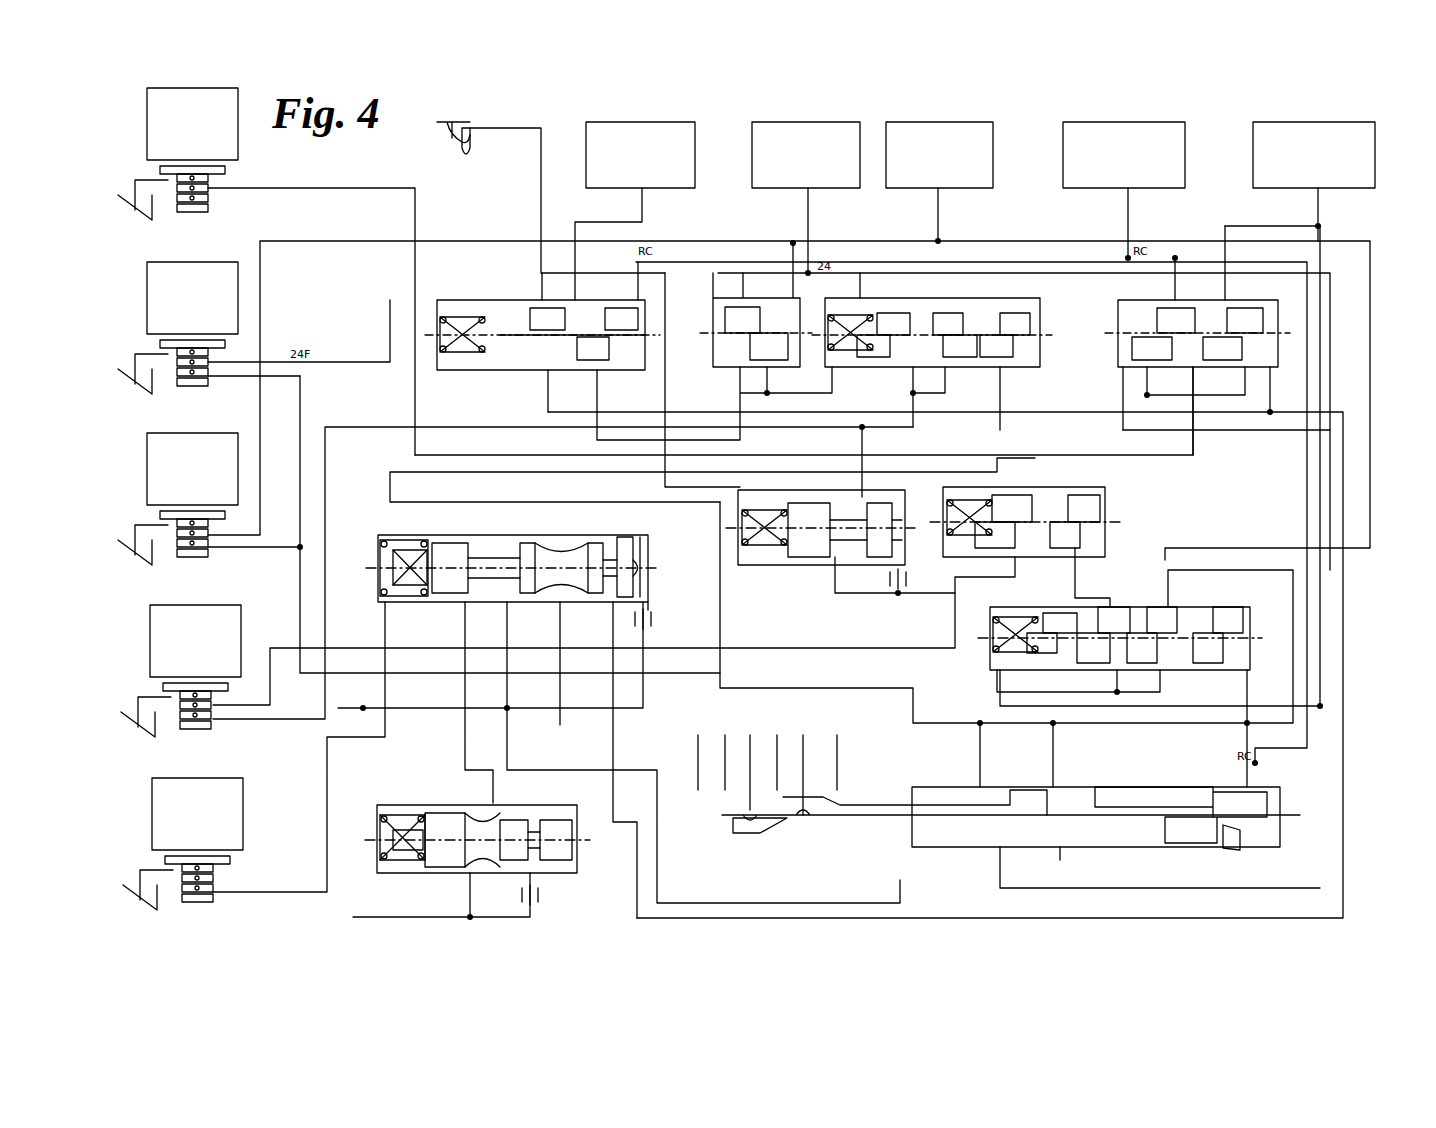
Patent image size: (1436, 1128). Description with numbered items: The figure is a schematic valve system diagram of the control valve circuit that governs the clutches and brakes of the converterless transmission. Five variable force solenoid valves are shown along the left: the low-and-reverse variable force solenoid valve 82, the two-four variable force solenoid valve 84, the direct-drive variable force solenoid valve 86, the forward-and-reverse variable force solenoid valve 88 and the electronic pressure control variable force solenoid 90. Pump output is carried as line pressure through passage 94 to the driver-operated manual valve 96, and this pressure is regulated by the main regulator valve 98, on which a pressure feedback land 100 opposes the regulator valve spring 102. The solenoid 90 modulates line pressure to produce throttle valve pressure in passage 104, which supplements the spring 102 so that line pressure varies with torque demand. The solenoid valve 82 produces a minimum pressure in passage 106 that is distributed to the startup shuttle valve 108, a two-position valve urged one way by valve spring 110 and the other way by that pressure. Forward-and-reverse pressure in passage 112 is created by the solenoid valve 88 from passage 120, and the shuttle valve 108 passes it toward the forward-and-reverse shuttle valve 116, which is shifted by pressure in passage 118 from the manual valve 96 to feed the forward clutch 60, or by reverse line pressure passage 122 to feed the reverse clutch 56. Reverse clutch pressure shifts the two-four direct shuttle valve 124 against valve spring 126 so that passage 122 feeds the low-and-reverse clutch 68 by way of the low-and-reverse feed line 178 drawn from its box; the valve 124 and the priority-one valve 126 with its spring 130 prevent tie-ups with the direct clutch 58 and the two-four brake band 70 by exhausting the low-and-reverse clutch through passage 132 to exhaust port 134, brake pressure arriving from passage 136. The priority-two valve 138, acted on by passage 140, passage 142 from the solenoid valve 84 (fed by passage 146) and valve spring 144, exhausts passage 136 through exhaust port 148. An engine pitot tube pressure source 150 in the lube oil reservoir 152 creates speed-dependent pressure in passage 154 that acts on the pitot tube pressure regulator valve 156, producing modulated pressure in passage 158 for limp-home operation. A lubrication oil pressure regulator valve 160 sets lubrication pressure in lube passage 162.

The low-and-reverse variable force solenoid valve 82 is at (147, 152).
The 2/4 variable force solenoid valve 84 is at (147, 302).
The direct-drive variable force solenoid valve 86 is at (147, 472).
The forward-and-reverse variable force solenoid valve 88 is at (150, 647).
The electronic pressure control variable force solenoid 90 is at (152, 817).
The engine pitot tube pressure source 150 is at (480, 125).
The lube oil reservoir 152 is at (440, 148).
The passage 154 is at (668, 352).
The passage 106 is at (292, 188).
The passage 120 is at (505, 455).
The lo/rev clutch feed passage LR 178 is at (575, 222).
The low-and-reverse clutch 68 is at (695, 160).
The 2/4 brake band 70 is at (752, 168).
The direct clutch 58 is at (993, 160).
The reverse clutch 56 is at (1063, 168).
The forward clutch 60 is at (1253, 160).
The passage 136 is at (880, 243).
The passage 146 is at (300, 520).
The priority 1 valve 126 is at (475, 315).
The 2/4 direct shuttle valve 124 is at (575, 320).
The spring 130 is at (848, 322).
The forward-and-reverse shuttle valve 116 is at (1216, 290).
The exhaust port 134 is at (1123, 372).
The passage 132 is at (1135, 395).
The passage 118 is at (1270, 432).
The reverse line pressure passage 122 is at (1343, 422).
The main regulator valve 98 is at (566, 535).
The regulator valve spring 102 is at (395, 540).
The pressure feedback land 100 is at (637, 540).
The pitot tube pressure regulator valve 156 is at (835, 560).
The passage 158 is at (930, 593).
The passage 112 is at (883, 645).
The startup shuttle valve 108 is at (1080, 505).
The valve spring 110 is at (980, 500).
The passage 104 is at (1175, 475).
The priority 2 valve 138 is at (1200, 598).
The valve spring 144 is at (1020, 617).
The passage 142 is at (915, 690).
The passage 140 is at (1343, 695).
The manual valve 96 is at (1129, 790).
The exhaust port 148 is at (1225, 728).
The line pressure passage 94 is at (730, 903).
The lubrication oil pressure regulator valve 160 is at (482, 813).
The lube passage 162 is at (432, 870).